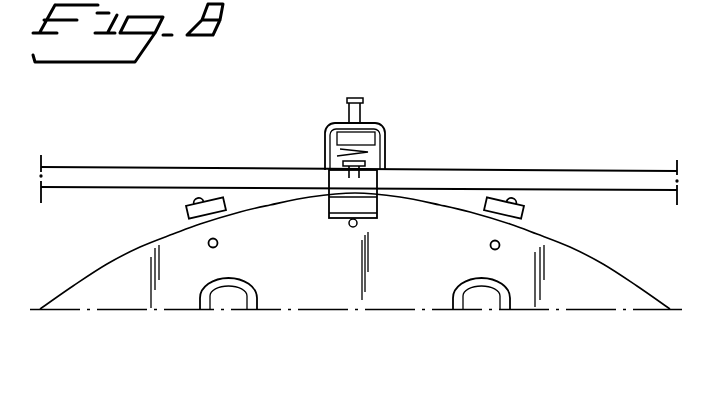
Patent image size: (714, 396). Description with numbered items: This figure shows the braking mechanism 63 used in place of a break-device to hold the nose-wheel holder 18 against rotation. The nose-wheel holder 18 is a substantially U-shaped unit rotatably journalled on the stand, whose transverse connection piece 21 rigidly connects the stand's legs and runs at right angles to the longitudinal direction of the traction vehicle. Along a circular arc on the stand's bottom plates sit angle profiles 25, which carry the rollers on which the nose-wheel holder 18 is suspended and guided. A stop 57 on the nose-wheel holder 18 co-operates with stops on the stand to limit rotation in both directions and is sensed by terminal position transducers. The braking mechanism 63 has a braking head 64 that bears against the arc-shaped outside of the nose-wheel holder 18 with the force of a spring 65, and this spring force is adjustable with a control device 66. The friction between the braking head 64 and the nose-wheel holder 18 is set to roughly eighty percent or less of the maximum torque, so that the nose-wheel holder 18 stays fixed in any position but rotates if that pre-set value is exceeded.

The nose-wheel holder 18 is at (577, 258).
The transverse connection piece 21 is at (203, 167).
The angle profile 25 is at (188, 213).
The stop 57 is at (329, 212).
The braking mechanism 63 is at (408, 128).
The braking head 64 is at (368, 187).
The spring 65 is at (368, 152).
The control device 66 is at (363, 99).